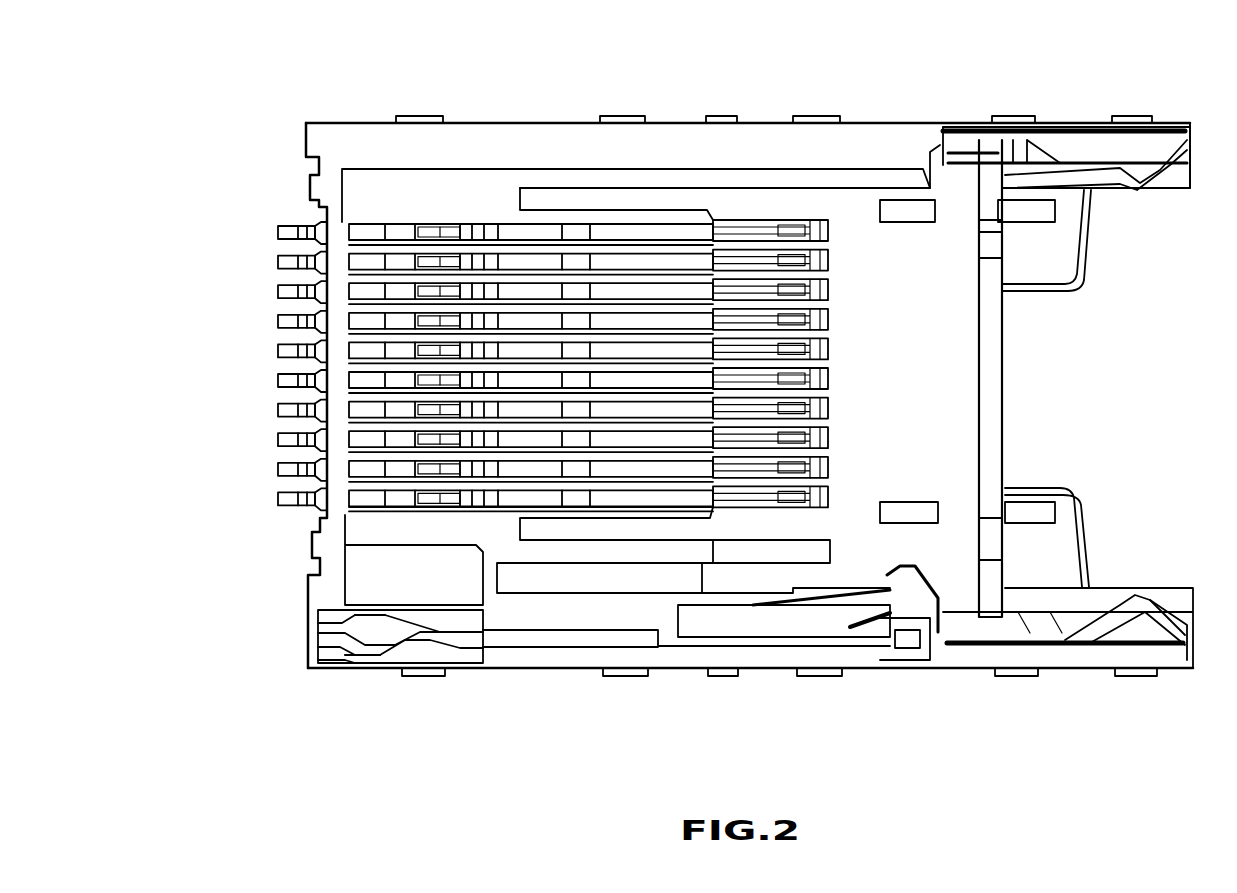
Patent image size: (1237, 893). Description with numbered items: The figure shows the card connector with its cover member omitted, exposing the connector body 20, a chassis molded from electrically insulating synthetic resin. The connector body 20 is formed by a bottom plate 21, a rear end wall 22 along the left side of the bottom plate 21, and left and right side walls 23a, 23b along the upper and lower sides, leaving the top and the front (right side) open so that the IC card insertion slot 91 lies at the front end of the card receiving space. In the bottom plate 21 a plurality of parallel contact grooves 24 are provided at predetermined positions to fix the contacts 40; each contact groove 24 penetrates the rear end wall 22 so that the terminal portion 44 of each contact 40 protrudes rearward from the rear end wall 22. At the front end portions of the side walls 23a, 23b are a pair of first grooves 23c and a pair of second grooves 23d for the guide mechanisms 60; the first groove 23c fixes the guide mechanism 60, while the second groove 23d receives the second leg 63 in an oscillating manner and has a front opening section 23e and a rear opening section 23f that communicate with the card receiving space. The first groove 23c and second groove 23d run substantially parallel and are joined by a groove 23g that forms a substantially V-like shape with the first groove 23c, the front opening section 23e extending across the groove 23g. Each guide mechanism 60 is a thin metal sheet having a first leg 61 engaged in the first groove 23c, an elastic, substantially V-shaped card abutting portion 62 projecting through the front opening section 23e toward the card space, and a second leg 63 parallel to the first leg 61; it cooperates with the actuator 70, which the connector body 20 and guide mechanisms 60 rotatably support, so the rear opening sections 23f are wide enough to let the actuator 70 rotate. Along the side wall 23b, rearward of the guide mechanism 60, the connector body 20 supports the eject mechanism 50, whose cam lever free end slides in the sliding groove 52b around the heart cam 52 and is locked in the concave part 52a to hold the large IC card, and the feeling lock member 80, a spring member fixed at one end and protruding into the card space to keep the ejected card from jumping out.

The connector body 20 is at (962, 431).
The bottom plate 21 is at (400, 520).
The rear end wall 22 is at (340, 405).
The side wall 23a is at (872, 123).
The side wall 23b is at (690, 672).
The first groove 23c is at (1055, 650).
The second groove 23d is at (1100, 640).
The front opening section 23e is at (1158, 598).
The rear opening section 23f is at (960, 600).
The groove 23g is at (1165, 645).
The contact groove 24 is at (648, 233).
The contact 40 is at (517, 228).
The terminal portion 44 is at (280, 237).
The eject mechanism 50 is at (540, 660).
The heart cam 52 is at (390, 645).
The concave part 52a is at (360, 645).
The sliding groove 52b is at (370, 615).
The guide mechanism 60 is at (1137, 203).
The first leg 61 is at (1083, 123).
The card abutting portion 62 is at (1158, 135).
The second leg 63 is at (962, 175).
The actuator 70 is at (1009, 390).
The feeling lock member 80 is at (865, 592).
The IC card insertion slot 91 is at (1143, 485).